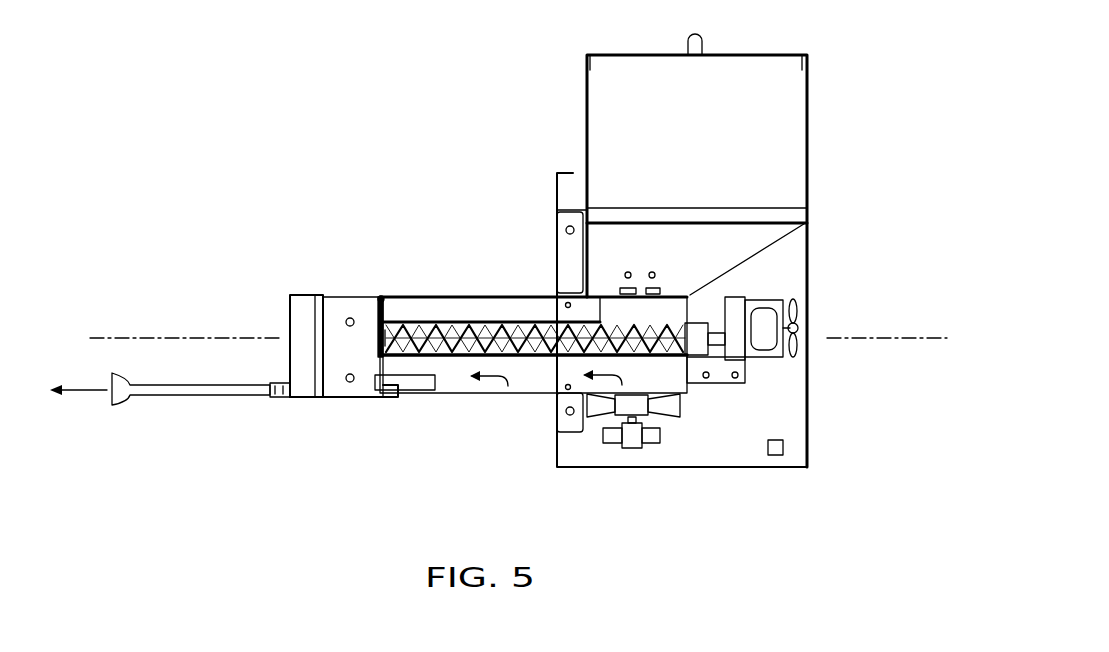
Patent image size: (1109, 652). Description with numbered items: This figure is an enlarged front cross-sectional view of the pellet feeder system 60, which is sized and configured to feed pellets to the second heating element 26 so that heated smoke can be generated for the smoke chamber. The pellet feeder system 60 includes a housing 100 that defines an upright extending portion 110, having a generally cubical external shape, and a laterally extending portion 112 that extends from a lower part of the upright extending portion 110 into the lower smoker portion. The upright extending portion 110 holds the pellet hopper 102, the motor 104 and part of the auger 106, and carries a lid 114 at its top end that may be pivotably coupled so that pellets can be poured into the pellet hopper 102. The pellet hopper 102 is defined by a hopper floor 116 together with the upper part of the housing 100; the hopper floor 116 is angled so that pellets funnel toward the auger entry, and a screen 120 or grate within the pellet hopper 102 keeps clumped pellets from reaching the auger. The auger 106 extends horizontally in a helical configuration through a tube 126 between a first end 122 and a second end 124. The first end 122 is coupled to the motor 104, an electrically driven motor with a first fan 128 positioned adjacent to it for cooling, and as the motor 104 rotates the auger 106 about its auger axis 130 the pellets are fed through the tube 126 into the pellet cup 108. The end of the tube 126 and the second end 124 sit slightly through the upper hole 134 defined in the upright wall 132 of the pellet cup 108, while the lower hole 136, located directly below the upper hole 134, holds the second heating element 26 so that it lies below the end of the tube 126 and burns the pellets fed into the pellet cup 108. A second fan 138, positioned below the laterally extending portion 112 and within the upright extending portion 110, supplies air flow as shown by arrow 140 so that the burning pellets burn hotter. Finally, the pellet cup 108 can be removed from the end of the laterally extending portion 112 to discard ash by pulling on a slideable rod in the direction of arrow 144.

The pellet feeder system 60 is at (884, 38).
The housing 100 is at (698, 235).
The pellet hopper 102 is at (808, 135).
The motor 104 is at (770, 365).
The auger 106 is at (563, 357).
The pellet cup 108 is at (309, 291).
The upright extending portion 110 is at (808, 252).
The laterally extending portion 112 is at (517, 297).
The lid 114 is at (740, 55).
The hopper floor 116 is at (795, 226).
The screen 120 is at (610, 207).
The first end 122 is at (688, 358).
The second end 124 is at (385, 337).
The tube 126 is at (430, 297).
The first fan 128 is at (798, 304).
The auger axis 130 is at (123, 338).
The upright wall 132 is at (382, 296).
The upper hole 134 is at (381, 322).
The lower hole 136 is at (366, 398).
The second fan 138 is at (677, 400).
The arrow 140 is at (510, 393).
The arrow 144 is at (80, 390).
The second heating element 26 is at (410, 392).